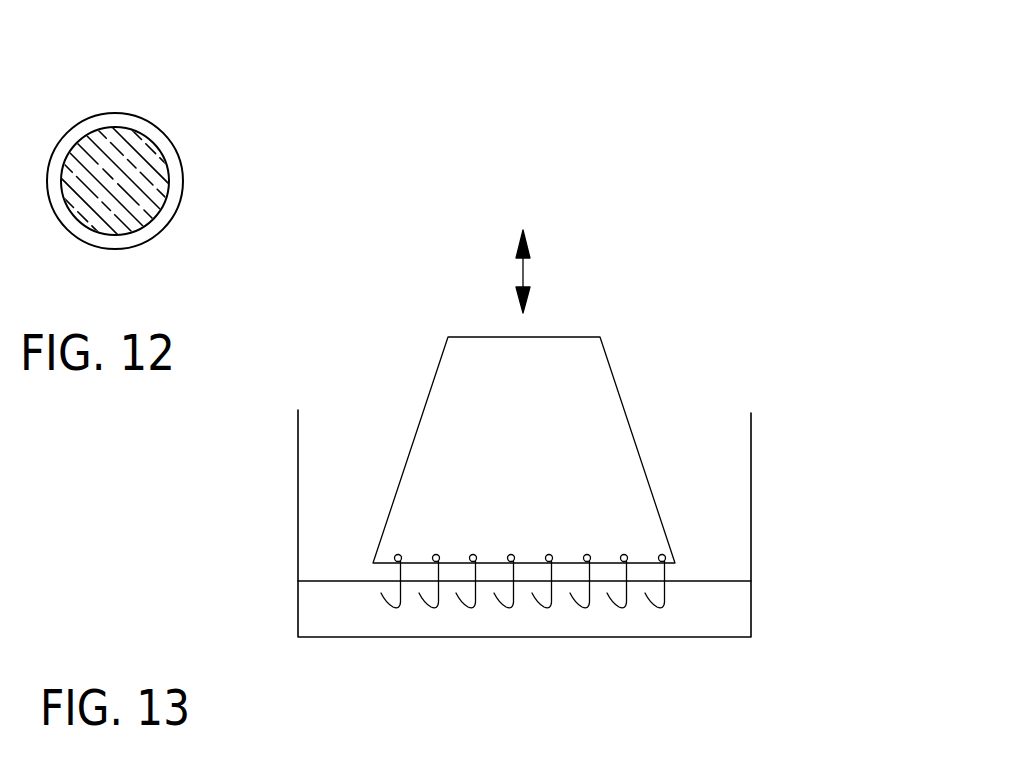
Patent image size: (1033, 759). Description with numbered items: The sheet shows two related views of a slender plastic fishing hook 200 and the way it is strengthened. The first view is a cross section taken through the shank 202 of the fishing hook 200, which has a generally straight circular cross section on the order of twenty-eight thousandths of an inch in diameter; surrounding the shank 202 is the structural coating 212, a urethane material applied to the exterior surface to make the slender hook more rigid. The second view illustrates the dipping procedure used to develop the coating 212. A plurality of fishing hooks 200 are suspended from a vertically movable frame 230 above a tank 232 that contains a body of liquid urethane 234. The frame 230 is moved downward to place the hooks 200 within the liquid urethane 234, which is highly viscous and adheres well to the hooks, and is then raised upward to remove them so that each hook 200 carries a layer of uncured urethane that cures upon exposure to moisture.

In FIG. 12, the fishing hook 200 is at (181, 181).
In FIG. 13, the fishing hook 200 is at (355, 614).
In FIG. 12, the shank 202 is at (137, 195).
In FIG. 12, the structural coating 212 is at (122, 245).
In FIG. 13, the vertically movable frame 230 is at (613, 378).
In FIG. 13, the tank 232 is at (752, 452).
In FIG. 13, the liquid urethane 234 is at (712, 613).